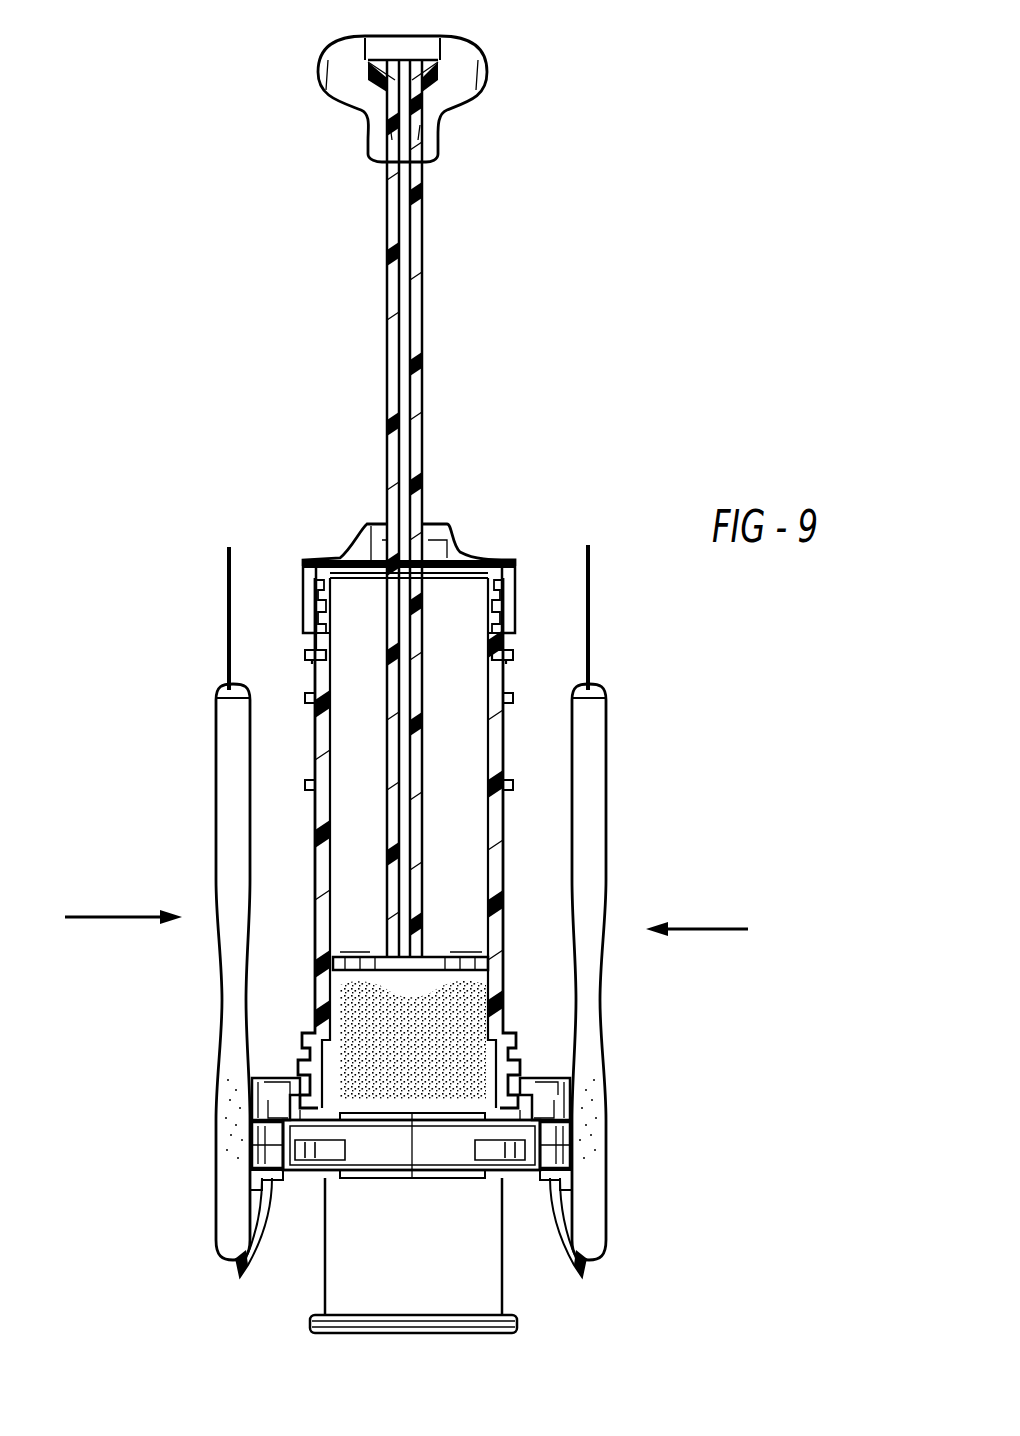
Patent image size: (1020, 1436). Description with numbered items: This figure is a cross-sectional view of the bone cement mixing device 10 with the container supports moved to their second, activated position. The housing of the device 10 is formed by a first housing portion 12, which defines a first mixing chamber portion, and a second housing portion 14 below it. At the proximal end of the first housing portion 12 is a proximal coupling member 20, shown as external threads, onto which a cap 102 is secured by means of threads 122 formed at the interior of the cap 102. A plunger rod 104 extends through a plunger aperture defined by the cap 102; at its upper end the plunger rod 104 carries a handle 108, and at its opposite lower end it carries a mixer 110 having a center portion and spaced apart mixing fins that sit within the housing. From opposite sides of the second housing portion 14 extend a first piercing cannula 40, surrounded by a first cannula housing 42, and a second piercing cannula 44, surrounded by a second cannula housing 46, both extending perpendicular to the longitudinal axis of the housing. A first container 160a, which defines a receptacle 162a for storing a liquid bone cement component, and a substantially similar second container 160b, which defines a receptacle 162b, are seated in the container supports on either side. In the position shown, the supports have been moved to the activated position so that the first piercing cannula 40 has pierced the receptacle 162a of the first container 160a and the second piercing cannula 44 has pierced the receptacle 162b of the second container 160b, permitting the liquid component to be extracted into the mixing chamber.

The device 10 is at (225, 192).
The first housing portion 12 is at (505, 753).
The second housing portion 14 is at (459, 1267).
The proximal coupling member 20 is at (500, 615).
The first piercing cannula 40 is at (548, 1125).
The first cannula housing 42 is at (565, 1173).
The second piercing cannula 44 is at (256, 1136).
The second cannula housing 46 is at (258, 1170).
The cap 102 is at (497, 575).
The plunger rod 104 is at (423, 222).
The handle 108 is at (462, 76).
The mixer 110 is at (470, 943).
The threads 122 is at (510, 578).
The first container 160a is at (588, 597).
The second container 160b is at (228, 606).
The receptacle 162a is at (585, 806).
The receptacle 162b is at (230, 790).